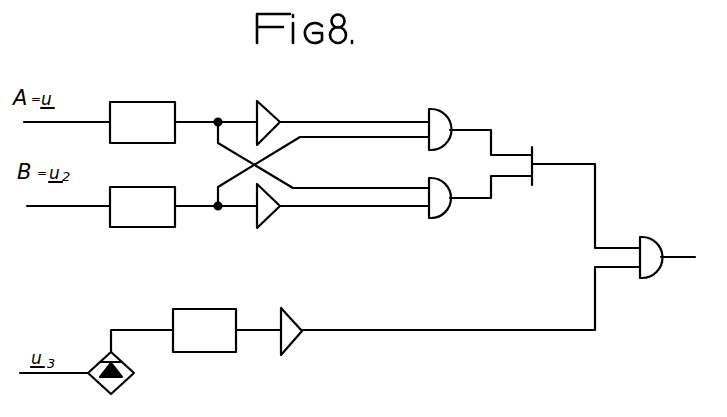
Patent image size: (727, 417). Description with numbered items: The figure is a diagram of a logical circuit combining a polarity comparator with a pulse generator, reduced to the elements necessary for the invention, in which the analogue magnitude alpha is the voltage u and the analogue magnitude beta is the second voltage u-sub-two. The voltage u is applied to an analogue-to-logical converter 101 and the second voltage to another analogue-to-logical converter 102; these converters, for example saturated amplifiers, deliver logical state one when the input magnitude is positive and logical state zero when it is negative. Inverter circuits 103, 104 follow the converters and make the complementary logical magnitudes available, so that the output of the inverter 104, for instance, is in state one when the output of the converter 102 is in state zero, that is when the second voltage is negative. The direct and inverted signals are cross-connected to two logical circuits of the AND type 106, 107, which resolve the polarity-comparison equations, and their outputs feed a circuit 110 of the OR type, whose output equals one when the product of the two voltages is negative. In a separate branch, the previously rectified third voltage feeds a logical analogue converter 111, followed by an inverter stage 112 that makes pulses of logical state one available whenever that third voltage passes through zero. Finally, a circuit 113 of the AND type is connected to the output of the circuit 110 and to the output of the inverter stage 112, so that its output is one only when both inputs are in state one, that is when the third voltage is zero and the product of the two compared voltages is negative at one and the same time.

The analogue-to-logical converter 101 is at (157, 93).
The analogue-to-logical converter 102 is at (146, 219).
The inverter circuit 103 is at (265, 116).
The inverter circuit 104 is at (267, 212).
The AND logical circuit 106 is at (442, 116).
The AND logical circuit 107 is at (437, 214).
The OR logical circuit 110 is at (533, 148).
The logical analogue converter 111 is at (216, 342).
The inverter stage 112 is at (296, 320).
The AND circuit 113 is at (647, 247).